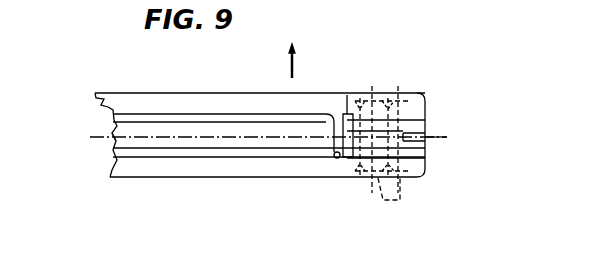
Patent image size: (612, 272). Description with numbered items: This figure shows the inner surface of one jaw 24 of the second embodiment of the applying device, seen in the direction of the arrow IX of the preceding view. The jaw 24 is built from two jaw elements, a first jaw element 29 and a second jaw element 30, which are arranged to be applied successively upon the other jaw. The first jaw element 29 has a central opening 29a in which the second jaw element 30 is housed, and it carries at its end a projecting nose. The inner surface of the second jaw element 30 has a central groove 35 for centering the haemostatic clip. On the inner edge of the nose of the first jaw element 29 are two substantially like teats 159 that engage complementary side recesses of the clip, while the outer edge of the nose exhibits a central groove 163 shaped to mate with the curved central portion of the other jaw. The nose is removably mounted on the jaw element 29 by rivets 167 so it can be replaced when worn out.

The jaw 24 is at (308, 60).
The first jaw element 29 is at (131, 107).
The central opening 29a is at (338, 160).
The second jaw element 30 is at (188, 121).
The central groove 35 is at (115, 146).
The teats 159 is at (348, 118).
The central groove 163 is at (420, 137).
The rivets 167 is at (398, 204).